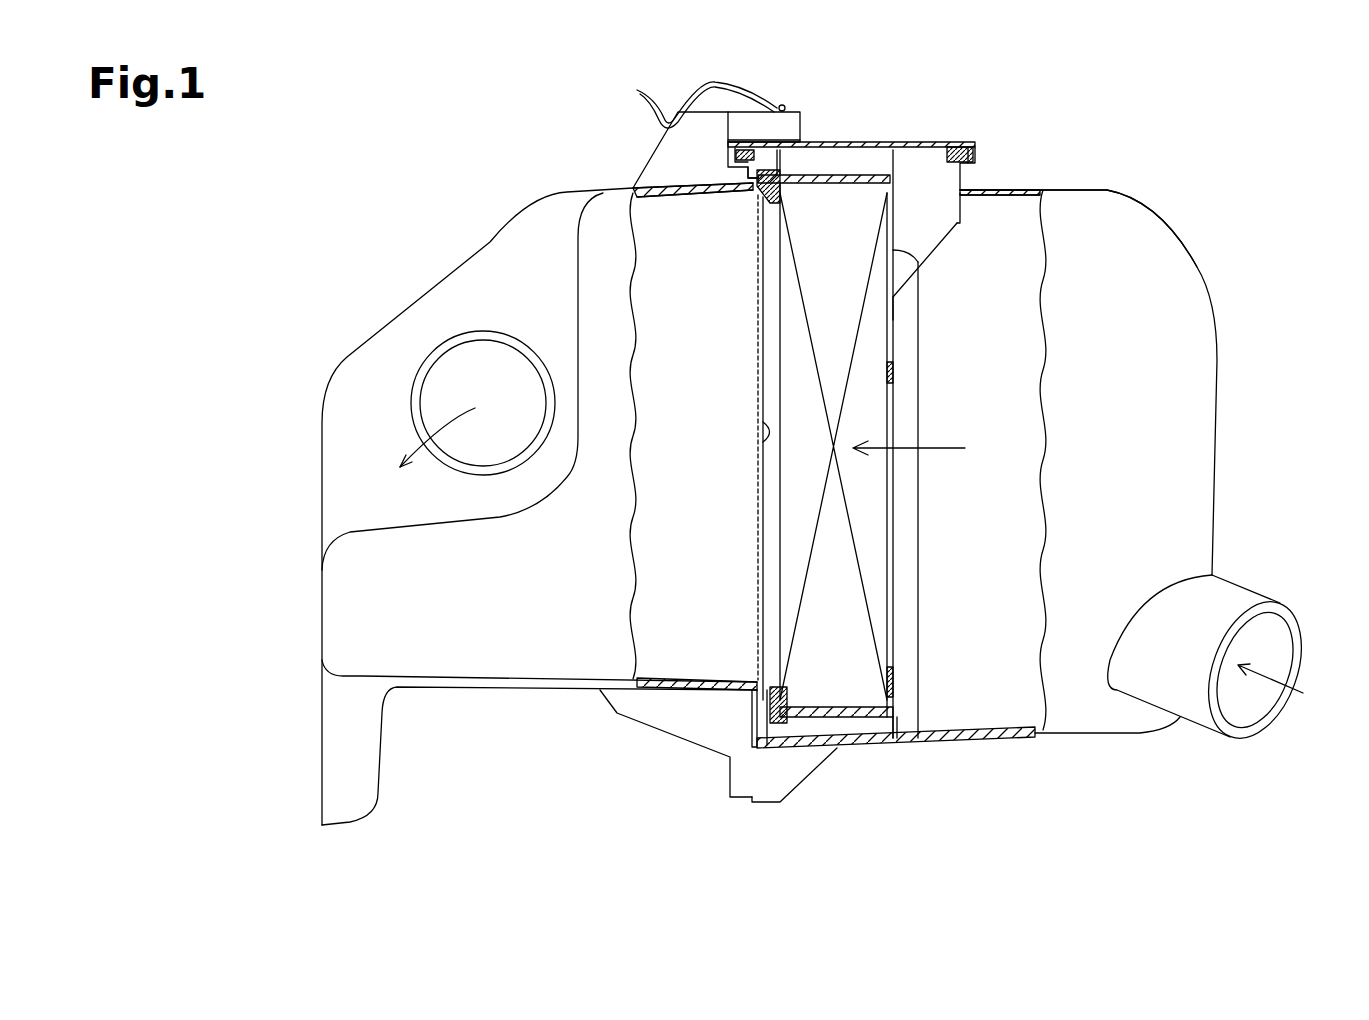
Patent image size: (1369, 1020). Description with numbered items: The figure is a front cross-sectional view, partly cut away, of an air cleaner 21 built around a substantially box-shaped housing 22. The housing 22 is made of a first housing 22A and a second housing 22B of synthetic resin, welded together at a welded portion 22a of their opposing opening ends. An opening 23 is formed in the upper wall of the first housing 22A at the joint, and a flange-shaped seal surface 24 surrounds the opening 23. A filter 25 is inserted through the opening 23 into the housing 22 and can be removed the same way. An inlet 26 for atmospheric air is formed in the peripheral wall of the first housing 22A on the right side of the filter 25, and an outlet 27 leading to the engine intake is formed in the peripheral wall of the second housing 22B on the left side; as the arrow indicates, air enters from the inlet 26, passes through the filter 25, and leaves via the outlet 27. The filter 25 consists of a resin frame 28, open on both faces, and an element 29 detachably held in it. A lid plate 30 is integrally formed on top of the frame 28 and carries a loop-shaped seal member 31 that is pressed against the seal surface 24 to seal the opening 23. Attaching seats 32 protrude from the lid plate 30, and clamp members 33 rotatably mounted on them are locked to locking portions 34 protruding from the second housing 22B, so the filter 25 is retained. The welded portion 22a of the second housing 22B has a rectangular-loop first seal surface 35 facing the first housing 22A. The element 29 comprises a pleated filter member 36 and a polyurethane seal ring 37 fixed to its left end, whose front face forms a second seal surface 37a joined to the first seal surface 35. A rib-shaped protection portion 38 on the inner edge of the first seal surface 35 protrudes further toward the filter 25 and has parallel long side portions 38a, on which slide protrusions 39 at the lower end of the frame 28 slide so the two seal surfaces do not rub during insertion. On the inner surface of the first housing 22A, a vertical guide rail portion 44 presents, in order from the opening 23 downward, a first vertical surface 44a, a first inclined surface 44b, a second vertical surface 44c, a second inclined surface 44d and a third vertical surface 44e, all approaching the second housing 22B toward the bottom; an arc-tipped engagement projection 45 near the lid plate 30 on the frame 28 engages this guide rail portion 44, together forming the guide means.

The air cleaner 21 is at (1098, 181).
The housing 22 is at (1150, 213).
The first housing 22A is at (1200, 272).
The second housing 22B is at (493, 242).
The welded portion 22a is at (753, 752).
The opening 23 is at (962, 212).
The seal surface 24 is at (976, 157).
The filter 25 is at (764, 279).
The inlet 26 is at (1275, 630).
The outlet 27 is at (505, 345).
The frame 28 is at (871, 150).
The element 29 is at (763, 332).
The lid plate 30 is at (912, 140).
The seal member 31 is at (955, 142).
The attaching seat 32 is at (797, 112).
The clamp member 33 is at (684, 96).
The locking portion 34 is at (653, 155).
The first seal surface 35 is at (758, 700).
The filter member 36 is at (763, 392).
The seal ring 37 is at (773, 203).
The second seal surface 37a is at (753, 177).
The protection portion 38 is at (768, 680).
The long side portion 38a is at (760, 430).
The slide protrusion 39 is at (822, 722).
The guide rail portion 44 is at (915, 392).
The first vertical surface 44a is at (952, 228).
The first inclined surface 44b is at (933, 242).
The second vertical surface 44c is at (912, 312).
The second inclined surface 44d is at (890, 692).
The third vertical surface 44e is at (897, 727).
The engagement projection 45 is at (910, 257).